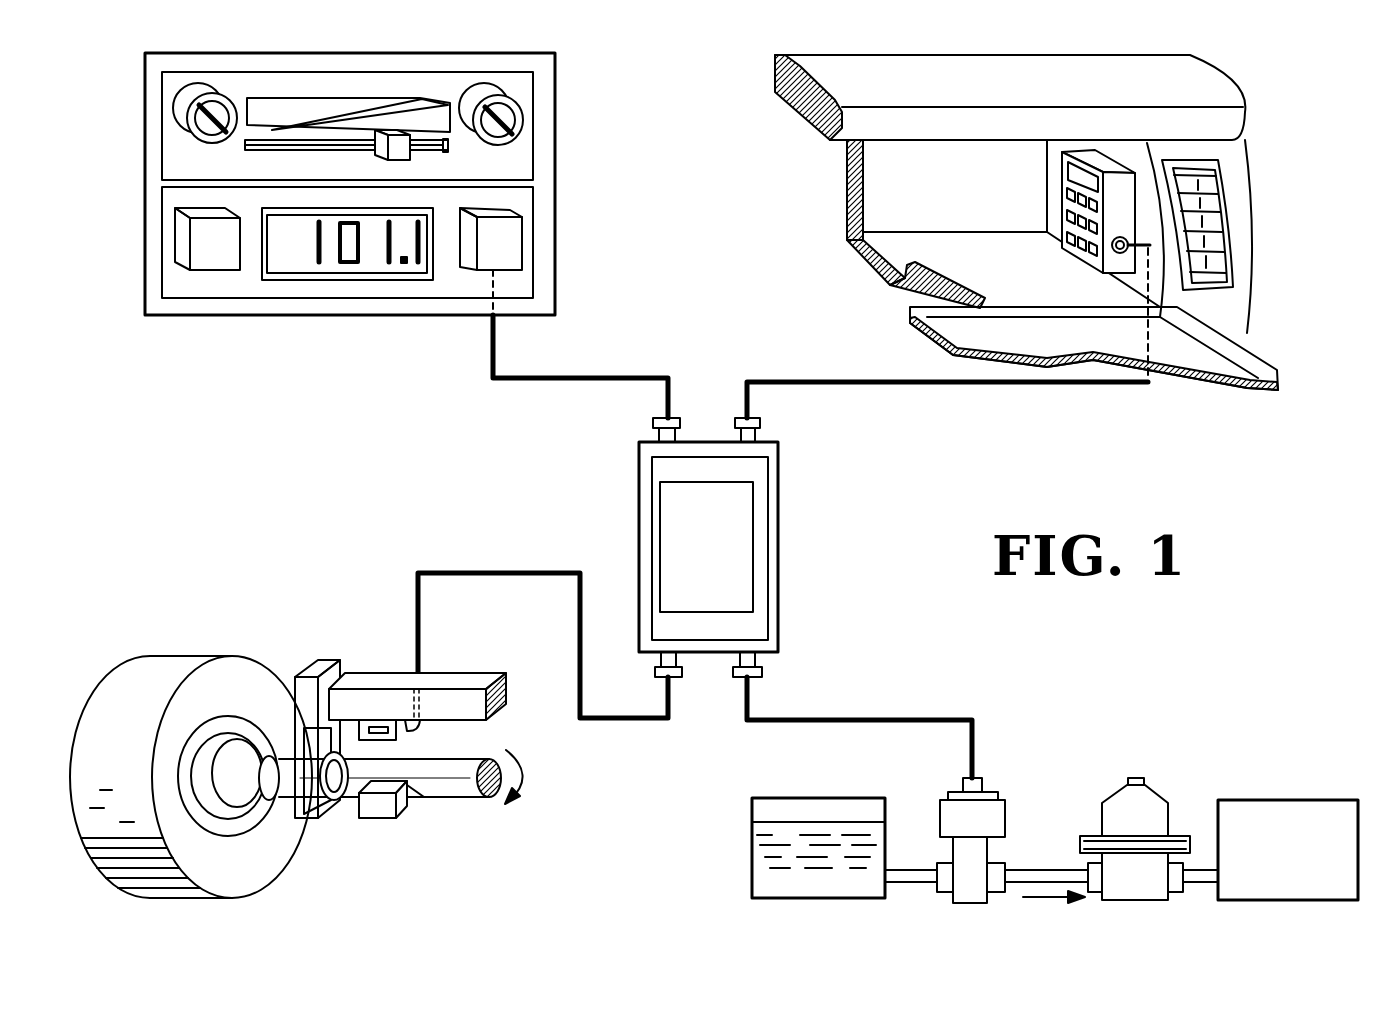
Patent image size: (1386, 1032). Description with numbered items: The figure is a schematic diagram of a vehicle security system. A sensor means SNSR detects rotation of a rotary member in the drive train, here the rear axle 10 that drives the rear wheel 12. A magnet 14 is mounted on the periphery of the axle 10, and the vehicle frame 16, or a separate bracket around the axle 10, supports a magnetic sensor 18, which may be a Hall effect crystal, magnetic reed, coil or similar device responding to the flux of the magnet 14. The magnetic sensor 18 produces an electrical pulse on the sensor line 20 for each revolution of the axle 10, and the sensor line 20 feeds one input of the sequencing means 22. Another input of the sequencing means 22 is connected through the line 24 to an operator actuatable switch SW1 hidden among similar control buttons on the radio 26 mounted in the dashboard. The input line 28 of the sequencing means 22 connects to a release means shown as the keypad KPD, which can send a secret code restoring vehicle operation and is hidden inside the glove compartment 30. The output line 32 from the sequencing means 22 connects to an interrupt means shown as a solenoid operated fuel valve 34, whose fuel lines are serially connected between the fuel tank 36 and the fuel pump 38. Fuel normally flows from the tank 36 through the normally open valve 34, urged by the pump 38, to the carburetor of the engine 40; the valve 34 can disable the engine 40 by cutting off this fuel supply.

The rear axle 10 is at (450, 780).
The rear wheel 12 is at (149, 673).
The magnet 14 is at (374, 805).
The vehicle frame 16 is at (345, 668).
The magnetic sensor 18 is at (352, 718).
The sensor line 20 is at (543, 621).
The sequencing means 22 is at (780, 545).
The line 24 is at (630, 378).
The radio 26 is at (547, 158).
The input line 28 is at (823, 380).
The glove compartment 30 is at (907, 182).
The output line 32 is at (887, 717).
The solenoid operated fuel valve 34 is at (1007, 813).
The fuel tank 36 is at (832, 798).
The fuel pump 38 is at (1120, 797).
The engine 40 is at (1283, 800).
The sensor means SNSR is at (430, 742).
The keypad KPD is at (1093, 153).
The operator actuatable switch SW1 is at (503, 248).